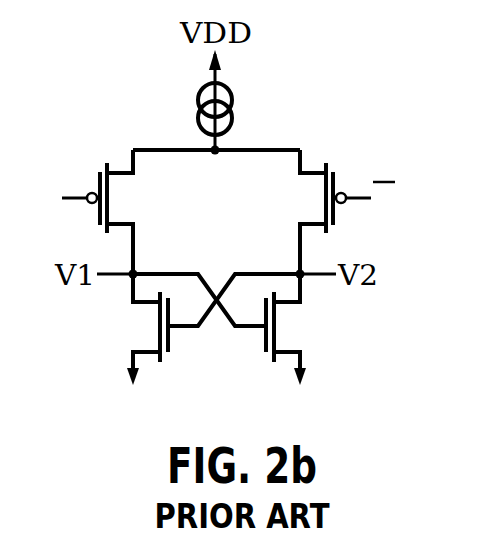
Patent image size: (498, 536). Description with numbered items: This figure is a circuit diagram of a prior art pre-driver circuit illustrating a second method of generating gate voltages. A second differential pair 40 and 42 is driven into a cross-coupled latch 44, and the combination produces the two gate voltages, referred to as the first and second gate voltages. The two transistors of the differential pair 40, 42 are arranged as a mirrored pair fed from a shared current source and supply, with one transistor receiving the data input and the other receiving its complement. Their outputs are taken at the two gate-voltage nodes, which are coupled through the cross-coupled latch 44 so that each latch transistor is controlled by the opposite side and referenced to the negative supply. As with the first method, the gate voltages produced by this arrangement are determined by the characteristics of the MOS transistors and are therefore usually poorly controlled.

The second differential pair transistor 40 is at (88, 165).
The second differential pair transistor 42 is at (346, 165).
The cross-coupled latch 44 is at (223, 352).